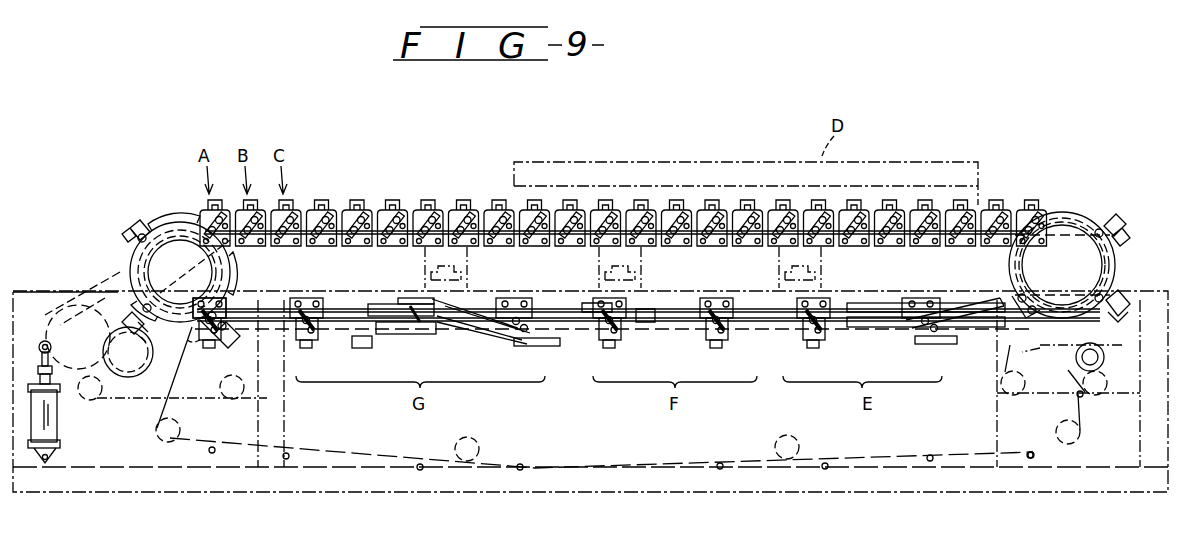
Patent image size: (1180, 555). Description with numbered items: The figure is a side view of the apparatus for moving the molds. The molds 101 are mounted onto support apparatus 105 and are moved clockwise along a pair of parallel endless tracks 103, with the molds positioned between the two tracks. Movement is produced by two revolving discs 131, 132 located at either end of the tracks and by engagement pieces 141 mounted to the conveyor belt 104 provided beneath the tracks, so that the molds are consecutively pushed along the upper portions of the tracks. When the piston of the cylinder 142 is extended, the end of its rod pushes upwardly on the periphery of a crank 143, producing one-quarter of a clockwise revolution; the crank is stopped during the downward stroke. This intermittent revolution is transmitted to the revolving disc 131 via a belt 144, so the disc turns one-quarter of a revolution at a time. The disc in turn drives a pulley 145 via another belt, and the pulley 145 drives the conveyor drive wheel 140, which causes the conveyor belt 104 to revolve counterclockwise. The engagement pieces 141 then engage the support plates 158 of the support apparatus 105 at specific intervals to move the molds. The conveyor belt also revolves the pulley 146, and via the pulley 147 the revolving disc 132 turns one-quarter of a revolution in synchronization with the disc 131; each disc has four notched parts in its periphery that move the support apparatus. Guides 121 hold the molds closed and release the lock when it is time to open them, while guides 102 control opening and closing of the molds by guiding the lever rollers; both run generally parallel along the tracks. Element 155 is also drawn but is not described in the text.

The mold 101 is at (312, 200).
The guide 102 is at (650, 340).
The endless track 103 is at (480, 214).
The conveyor belt 104 is at (340, 346).
The support apparatus 105 is at (446, 205).
The guide 121 is at (386, 342).
The revolving disc 131 is at (186, 218).
The revolving disc 132 is at (1078, 212).
The conveyor drive wheel 140 is at (200, 352).
The engagement piece 141 is at (522, 468).
The cylinder 142 is at (54, 424).
The crank 143 is at (56, 306).
The belt 144 is at (118, 290).
The pulley 145 is at (124, 376).
The pulley 146 is at (1078, 348).
The pulley 147 is at (1093, 372).
The roller 155 is at (146, 226).
The support plate 158 is at (712, 342).